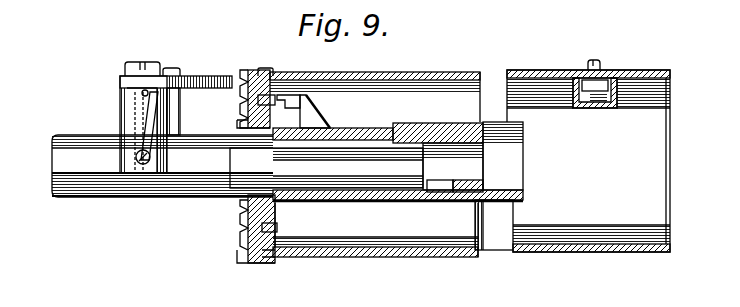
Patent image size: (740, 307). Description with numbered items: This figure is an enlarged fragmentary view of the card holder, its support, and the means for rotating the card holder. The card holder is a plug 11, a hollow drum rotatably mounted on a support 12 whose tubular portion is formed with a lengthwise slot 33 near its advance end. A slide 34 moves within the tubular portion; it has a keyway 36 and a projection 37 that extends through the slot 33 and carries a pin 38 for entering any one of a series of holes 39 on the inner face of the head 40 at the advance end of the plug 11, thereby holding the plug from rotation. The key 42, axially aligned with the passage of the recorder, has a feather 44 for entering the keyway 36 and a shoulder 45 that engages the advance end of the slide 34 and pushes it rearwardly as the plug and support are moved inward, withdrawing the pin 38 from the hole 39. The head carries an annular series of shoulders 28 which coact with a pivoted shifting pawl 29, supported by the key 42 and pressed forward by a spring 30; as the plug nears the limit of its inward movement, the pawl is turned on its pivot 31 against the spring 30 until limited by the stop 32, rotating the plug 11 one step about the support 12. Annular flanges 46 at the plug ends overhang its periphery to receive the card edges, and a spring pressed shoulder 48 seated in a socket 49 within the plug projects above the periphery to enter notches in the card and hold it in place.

The plug 11 is at (405, 250).
The support 12 is at (486, 200).
The shoulders 28 is at (242, 208).
The shifting pawl 29 is at (204, 75).
The spring 30 is at (145, 118).
The pivot 31 is at (128, 63).
The stop 32 is at (182, 113).
The lengthwise slot 33 is at (372, 127).
The slide 34 is at (441, 125).
The keyway 36 is at (437, 196).
The projection 37 is at (320, 115).
The pin 38 is at (290, 97).
The holes 39 is at (273, 93).
The head 40 is at (250, 262).
The key 42 is at (52, 157).
The feather 44 is at (346, 196).
The shoulder 45 is at (272, 160).
The annular flanges 46 is at (262, 68).
The spring pressed shoulder 48 is at (600, 63).
The socket 49 is at (585, 106).